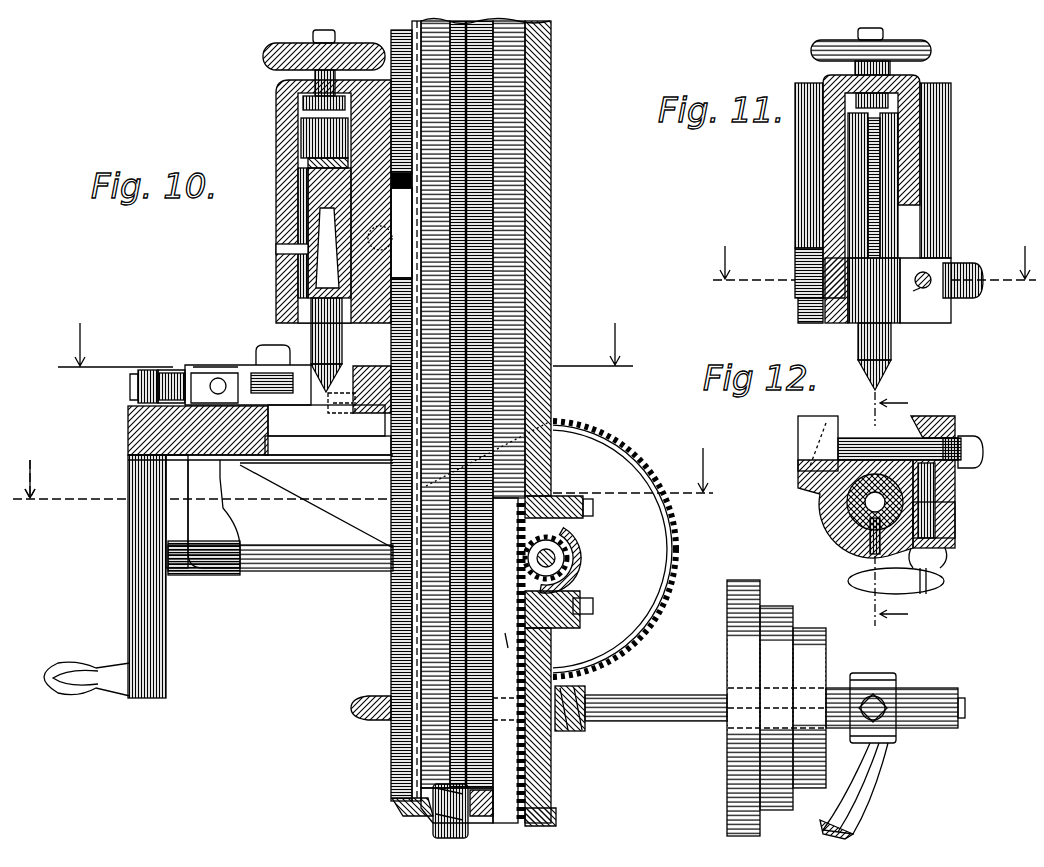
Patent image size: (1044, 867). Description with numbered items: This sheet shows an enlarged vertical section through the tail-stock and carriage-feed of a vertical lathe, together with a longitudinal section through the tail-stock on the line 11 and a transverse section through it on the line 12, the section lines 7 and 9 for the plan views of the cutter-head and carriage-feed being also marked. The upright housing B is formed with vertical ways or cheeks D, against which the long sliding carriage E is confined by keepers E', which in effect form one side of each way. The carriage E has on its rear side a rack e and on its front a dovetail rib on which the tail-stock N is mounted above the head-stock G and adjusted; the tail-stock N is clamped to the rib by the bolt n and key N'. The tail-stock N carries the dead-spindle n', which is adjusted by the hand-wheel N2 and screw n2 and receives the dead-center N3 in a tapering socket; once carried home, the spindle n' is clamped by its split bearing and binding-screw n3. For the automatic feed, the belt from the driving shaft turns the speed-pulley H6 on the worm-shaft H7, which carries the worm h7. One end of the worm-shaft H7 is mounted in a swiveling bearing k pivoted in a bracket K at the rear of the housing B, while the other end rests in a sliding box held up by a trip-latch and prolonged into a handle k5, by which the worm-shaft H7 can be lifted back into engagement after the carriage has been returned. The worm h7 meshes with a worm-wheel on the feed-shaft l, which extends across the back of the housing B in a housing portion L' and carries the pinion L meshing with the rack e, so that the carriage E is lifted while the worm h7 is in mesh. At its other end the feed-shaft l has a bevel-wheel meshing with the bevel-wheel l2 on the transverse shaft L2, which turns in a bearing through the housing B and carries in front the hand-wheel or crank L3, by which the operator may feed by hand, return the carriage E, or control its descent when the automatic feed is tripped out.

In FIG. 10, the tail-stock N is at (318, 246).
In FIG. 12, the tail-stock N is at (876, 487).
In FIG. 10, the hand-wheel N2 is at (256, 47).
In FIG. 11, the hand-wheel N2 is at (925, 42).
In FIG. 10, the screw n2 is at (296, 104).
In FIG. 11, the screw n2 is at (857, 101).
In FIG. 10, the dead-spindle n' is at (324, 138).
In FIG. 11, the dead-spindle n' is at (873, 185).
In FIG. 11, the key N' is at (872, 199).
In FIG. 12, the key N' is at (818, 443).
In FIG. 10, the bolt n is at (401, 233).
In FIG. 11, the bolt n is at (914, 297).
In FIG. 12, the bolt n is at (910, 483).
In FIG. 11, the binding-screw n3 is at (920, 267).
In FIG. 12, the binding-screw n3 is at (948, 508).
In FIG. 10, the dead-center N3 is at (336, 354).
In FIG. 11, the dead-center N3 is at (885, 351).
In FIG. 10, the upright housing B is at (557, 422).
In FIG. 10, the carriage E is at (486, 404).
In FIG. 10, the rack e is at (454, 422).
In FIG. 10, the keepers E' is at (405, 820).
In FIG. 10, the head-stock G is at (450, 811).
In FIG. 10, the ways or cheeks D is at (485, 812).
In FIG. 10, the pinion L is at (548, 549).
In FIG. 10, the pinion housing L' is at (575, 563).
In FIG. 10, the feed-shaft l is at (560, 546).
In FIG. 10, the bevel-wheel l2 is at (509, 628).
In FIG. 10, the transverse shaft L2 is at (280, 571).
In FIG. 10, the hand-wheel or crank L3 is at (116, 576).
In FIG. 10, the handle k5 is at (342, 702).
In FIG. 10, the worm h7 is at (580, 698).
In FIG. 10, the worm-shaft H7 is at (775, 702).
In FIG. 10, the speed-pulley H6 is at (776, 708).
In FIG. 10, the swiveling bearing k is at (889, 715).
In FIG. 10, the bracket K is at (861, 791).
In FIG. 10, the section line 7 7 is at (345, 357).
In FIG. 10, the section line 9 9 is at (363, 484).
In FIG. 11, the section line 11 11 is at (881, 409).
In FIG. 12, the section line 11 11 is at (880, 591).
In FIG. 11, the section line 12 12 is at (874, 275).